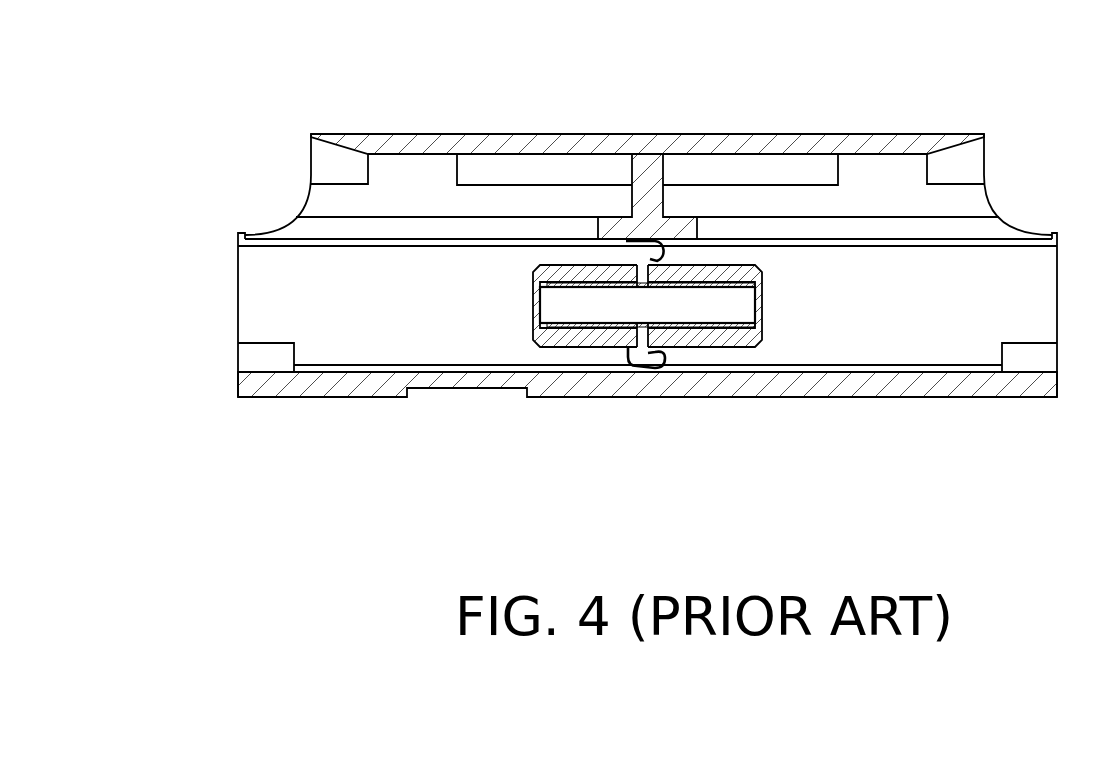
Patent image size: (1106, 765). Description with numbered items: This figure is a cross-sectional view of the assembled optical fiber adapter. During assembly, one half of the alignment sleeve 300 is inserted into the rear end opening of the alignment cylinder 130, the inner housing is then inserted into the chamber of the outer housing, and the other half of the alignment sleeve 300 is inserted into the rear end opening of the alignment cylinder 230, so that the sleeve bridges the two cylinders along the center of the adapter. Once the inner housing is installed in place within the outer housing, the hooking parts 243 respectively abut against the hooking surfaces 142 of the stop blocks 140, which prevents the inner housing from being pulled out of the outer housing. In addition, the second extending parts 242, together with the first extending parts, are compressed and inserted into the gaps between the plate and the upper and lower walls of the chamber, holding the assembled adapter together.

The alignment cylinder 130 is at (710, 340).
The stop block 140 is at (628, 370).
The hooking surface 142 is at (630, 244).
The alignment cylinder 230 is at (557, 337).
The second extending part 242 is at (648, 366).
The hooking part 243 is at (634, 244).
The alignment sleeve 300 is at (742, 310).